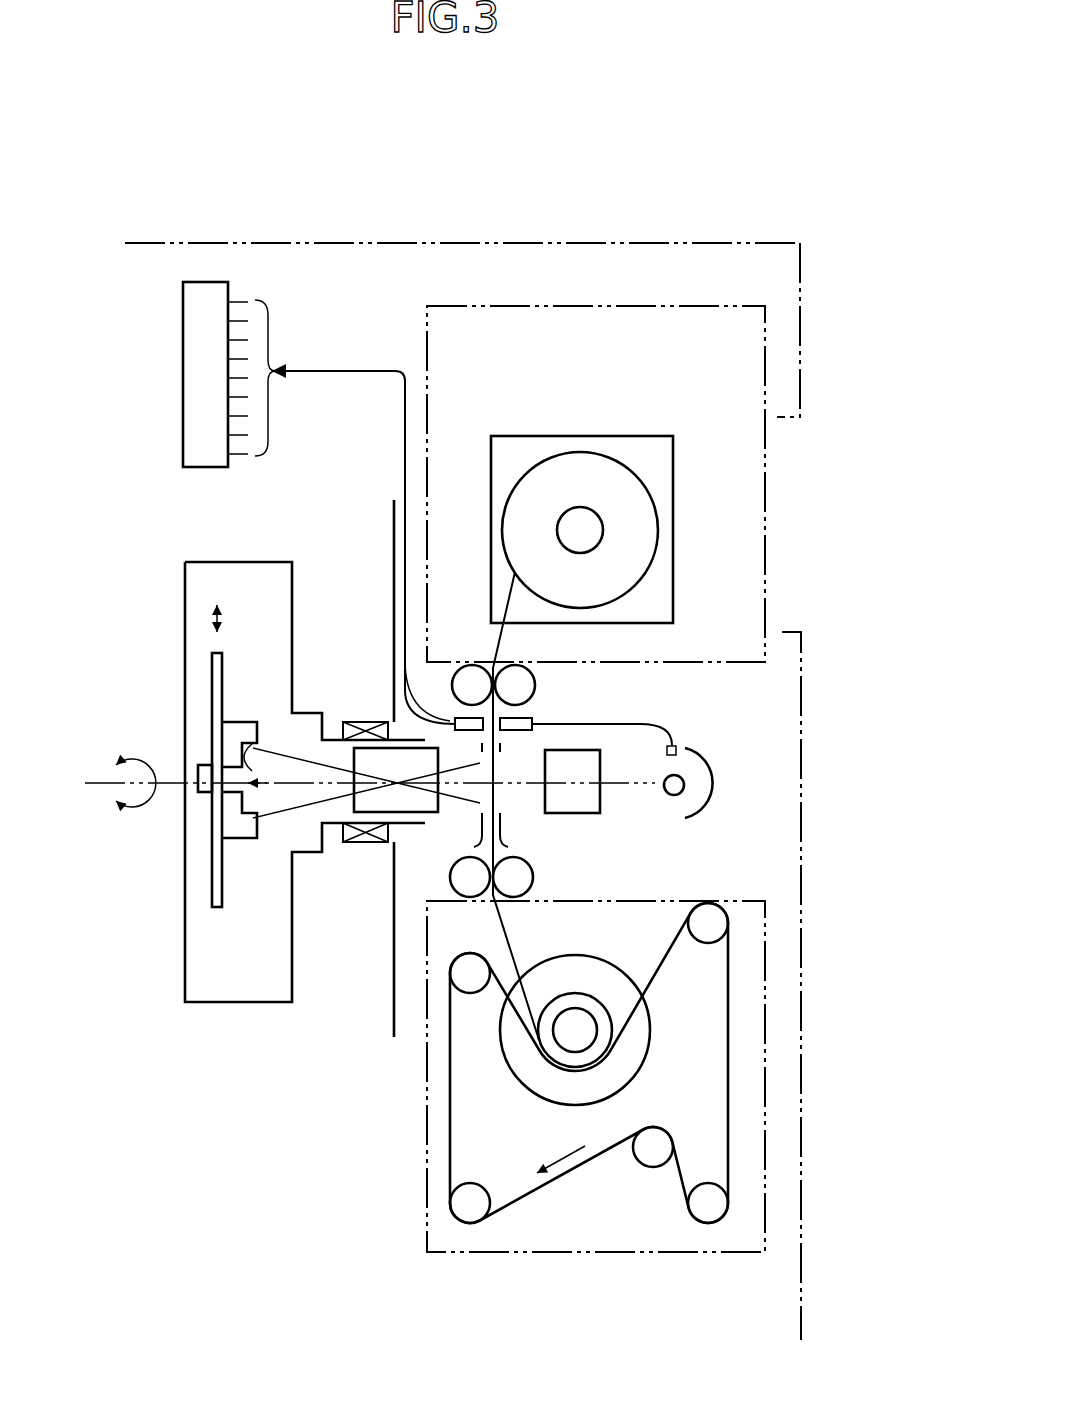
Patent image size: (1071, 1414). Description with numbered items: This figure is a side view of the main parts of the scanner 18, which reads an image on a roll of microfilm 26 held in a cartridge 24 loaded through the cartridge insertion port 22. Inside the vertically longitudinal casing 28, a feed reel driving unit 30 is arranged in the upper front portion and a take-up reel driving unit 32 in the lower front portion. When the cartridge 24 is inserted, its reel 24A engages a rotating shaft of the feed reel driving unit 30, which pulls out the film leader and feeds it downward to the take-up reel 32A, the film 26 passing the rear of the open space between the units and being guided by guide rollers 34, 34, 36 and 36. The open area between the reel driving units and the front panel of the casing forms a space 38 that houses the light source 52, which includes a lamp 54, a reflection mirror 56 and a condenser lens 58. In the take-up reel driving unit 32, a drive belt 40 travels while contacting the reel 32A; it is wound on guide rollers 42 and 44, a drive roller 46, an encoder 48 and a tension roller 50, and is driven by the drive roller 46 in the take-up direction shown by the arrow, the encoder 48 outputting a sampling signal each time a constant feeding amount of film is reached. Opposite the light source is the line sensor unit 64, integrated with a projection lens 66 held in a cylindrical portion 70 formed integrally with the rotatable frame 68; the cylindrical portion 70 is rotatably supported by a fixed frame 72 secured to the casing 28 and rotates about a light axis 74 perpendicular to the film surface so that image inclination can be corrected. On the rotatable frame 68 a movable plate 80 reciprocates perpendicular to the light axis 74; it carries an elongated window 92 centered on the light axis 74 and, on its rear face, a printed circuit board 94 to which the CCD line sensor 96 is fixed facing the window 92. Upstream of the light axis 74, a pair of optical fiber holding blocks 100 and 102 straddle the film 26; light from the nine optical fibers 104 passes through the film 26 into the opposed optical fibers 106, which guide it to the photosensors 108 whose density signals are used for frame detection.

The scanner 18 is at (497, 293).
The cartridge insertion port 22 is at (646, 484).
The cartridge 24 is at (624, 498).
The reel 24A is at (657, 508).
The microfilm 26 is at (496, 926).
The casing 28 is at (360, 240).
The feed reel driving unit 30 is at (804, 290).
The take-up reel driving unit 32 is at (651, 1108).
The take-up reel 32A is at (650, 1062).
The guide rollers 34 is at (470, 665).
The guide rollers 36 is at (450, 880).
The space 38 is at (762, 747).
The drive belt 40 is at (730, 1100).
The guide roller 42 is at (470, 985).
The guide roller 44 is at (730, 922).
The drive roller 46 is at (706, 1216).
The encoder 48 is at (650, 1160).
The tension roller 50 is at (470, 1212).
The light source 52 is at (769, 811).
The lamp 54 is at (684, 791).
The reflection mirror 56 is at (700, 806).
The condenser lens 58 is at (580, 814).
The line sensor unit 64 is at (280, 768).
The projection lens 66 is at (432, 745).
The rotatable frame 68 is at (292, 935).
The cylindrical portion 70 is at (398, 824).
The fixed frame 72 is at (394, 538).
The light axis 74 is at (630, 783).
The movable plate 80 is at (250, 838).
The window 92 is at (250, 768).
The printed circuit board 94 is at (212, 673).
The CCD line sensor 96 is at (205, 793).
The optical fiber holding block 100 is at (532, 720).
The optical fiber holding block 102 is at (440, 715).
The optical fibers 104 is at (680, 740).
The optical fibers 106 is at (358, 370).
The photosensors 108 is at (205, 468).